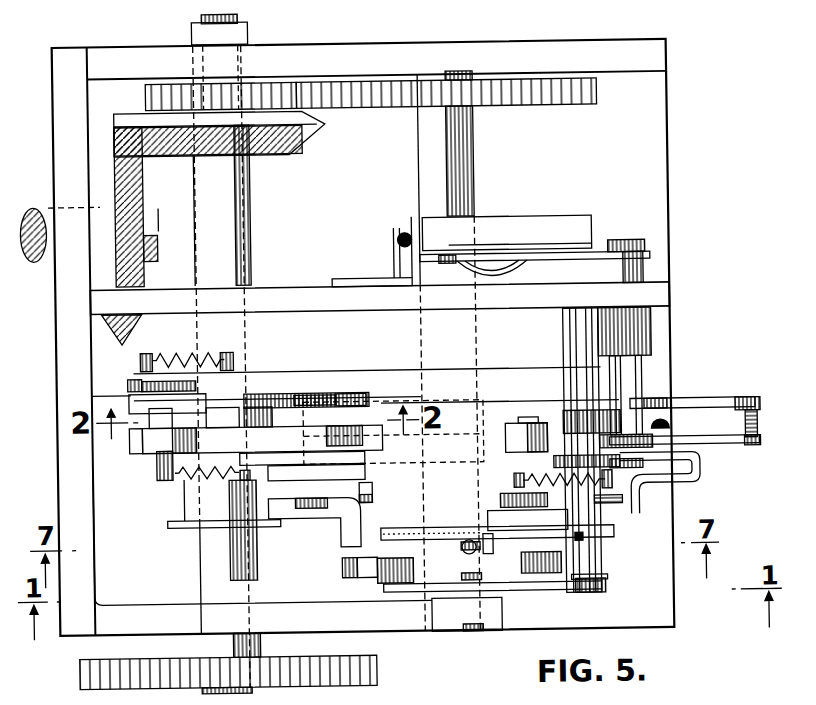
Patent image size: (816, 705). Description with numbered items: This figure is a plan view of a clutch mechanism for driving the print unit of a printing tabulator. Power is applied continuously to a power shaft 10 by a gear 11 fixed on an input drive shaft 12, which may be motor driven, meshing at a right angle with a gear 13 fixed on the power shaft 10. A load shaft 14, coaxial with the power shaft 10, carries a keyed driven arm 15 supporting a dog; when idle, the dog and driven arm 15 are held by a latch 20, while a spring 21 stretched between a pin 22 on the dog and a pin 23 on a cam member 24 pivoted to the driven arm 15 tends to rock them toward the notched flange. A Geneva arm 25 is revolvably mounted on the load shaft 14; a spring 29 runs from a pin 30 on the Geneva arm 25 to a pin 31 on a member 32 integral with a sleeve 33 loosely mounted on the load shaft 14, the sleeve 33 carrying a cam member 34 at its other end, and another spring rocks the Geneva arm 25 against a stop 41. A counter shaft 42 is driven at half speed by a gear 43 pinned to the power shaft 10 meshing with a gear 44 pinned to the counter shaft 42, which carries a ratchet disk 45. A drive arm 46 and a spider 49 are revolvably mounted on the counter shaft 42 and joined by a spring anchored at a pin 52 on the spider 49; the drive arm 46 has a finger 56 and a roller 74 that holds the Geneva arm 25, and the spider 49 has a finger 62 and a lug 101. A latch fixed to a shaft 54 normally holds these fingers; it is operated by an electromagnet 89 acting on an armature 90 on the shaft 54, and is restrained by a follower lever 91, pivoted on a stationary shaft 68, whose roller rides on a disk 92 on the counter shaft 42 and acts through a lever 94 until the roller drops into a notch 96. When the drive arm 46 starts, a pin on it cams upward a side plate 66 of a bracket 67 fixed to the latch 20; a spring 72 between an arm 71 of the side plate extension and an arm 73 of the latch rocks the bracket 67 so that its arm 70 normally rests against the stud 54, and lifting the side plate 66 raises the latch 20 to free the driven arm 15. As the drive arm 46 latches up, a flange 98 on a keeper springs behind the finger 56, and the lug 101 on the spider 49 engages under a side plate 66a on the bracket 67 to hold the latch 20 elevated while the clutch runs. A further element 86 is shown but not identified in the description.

The power shaft 10 is at (196, 210).
The gear 11 is at (146, 193).
The input drive shaft 12 is at (46, 212).
The gear 13 is at (314, 140).
The load shaft 14 is at (200, 578).
The driven arm 15 is at (146, 420).
The latch 20 is at (295, 376).
The spring 21 is at (190, 357).
The pin 22 is at (234, 364).
The pin 23 is at (140, 366).
The cam member 24 is at (127, 386).
The Geneva arm 25 is at (262, 429).
The spring 29 is at (213, 482).
The pin 30 is at (155, 474).
The pin 31 is at (252, 478).
The member 32 is at (276, 456).
The sleeve 33 is at (182, 510).
The cam member 34 is at (170, 530).
The stop 41 is at (112, 470).
The counter shaft 42 is at (477, 220).
The gear 43 is at (276, 64).
The gear 44 is at (555, 114).
The ratchet disk 45 is at (368, 504).
The drive arm 46 is at (330, 475).
The spider 49 is at (286, 522).
The pin 52 is at (527, 511).
The shaft 54 is at (645, 373).
The finger 56 is at (552, 418).
The finger 62 is at (606, 512).
The side plate 66 is at (546, 380).
The side plate 66a is at (582, 548).
The bracket 67 is at (504, 430).
The stationary shaft 68 is at (585, 570).
The arm 70 is at (666, 408).
The arm 71 is at (712, 406).
The spring 72 is at (754, 430).
The arm 73 is at (728, 456).
The roller 74 is at (512, 400).
The clutch 86 is at (345, 386).
The electromagnet 89 is at (396, 246).
The armature 90 is at (538, 223).
The follower lever 91 is at (515, 597).
The disk 92 is at (338, 572).
The lever 94 is at (699, 487).
The notch 96 is at (362, 584).
The flange 98 is at (590, 471).
The lug 101 is at (338, 538).